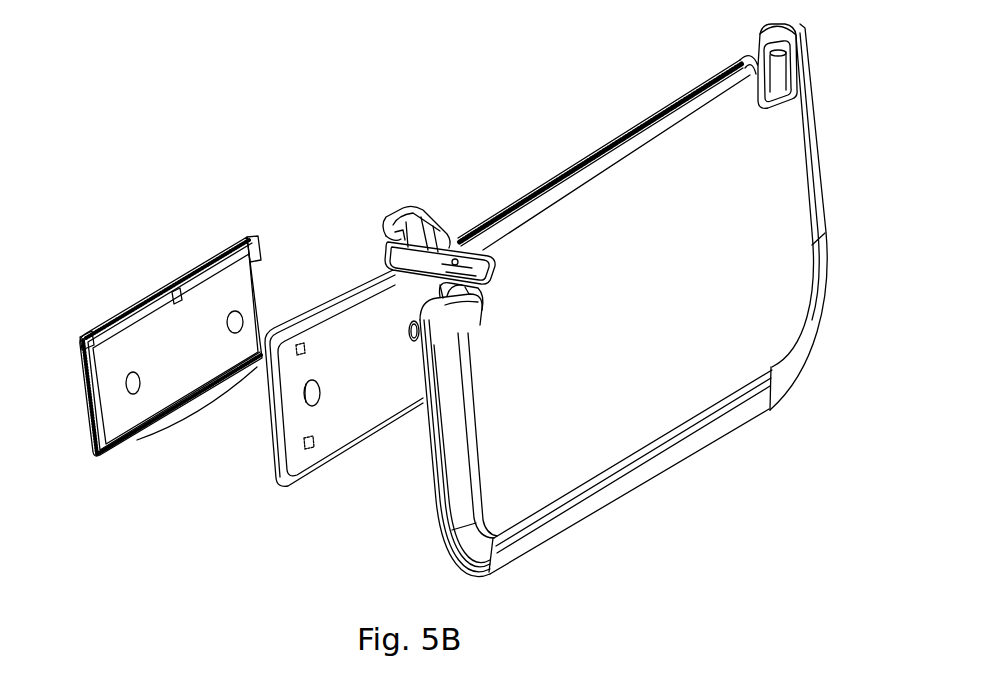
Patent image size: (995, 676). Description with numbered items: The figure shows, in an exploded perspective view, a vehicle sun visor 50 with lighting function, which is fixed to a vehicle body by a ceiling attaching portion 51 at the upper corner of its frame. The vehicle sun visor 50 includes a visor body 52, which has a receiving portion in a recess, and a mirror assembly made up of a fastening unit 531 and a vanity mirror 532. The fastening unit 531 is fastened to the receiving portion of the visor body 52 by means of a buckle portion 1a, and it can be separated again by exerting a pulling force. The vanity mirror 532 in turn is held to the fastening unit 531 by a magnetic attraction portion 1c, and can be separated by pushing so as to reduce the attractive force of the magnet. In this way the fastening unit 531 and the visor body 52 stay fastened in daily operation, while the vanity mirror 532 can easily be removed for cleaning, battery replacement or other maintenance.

The vehicle sun visor 50 is at (596, 108).
The ceiling attaching portion 51 is at (438, 230).
The visor body 52 is at (660, 377).
The fastening unit 531 is at (340, 287).
The vanity mirror 532 is at (120, 313).
The buckle portion 1a is at (303, 442).
The magnetic attraction portion 1c is at (133, 394).